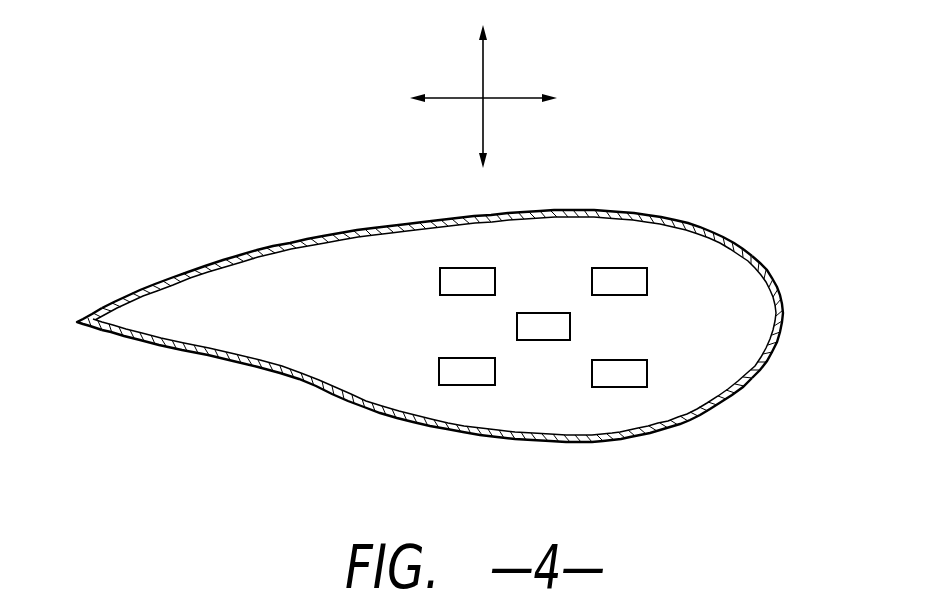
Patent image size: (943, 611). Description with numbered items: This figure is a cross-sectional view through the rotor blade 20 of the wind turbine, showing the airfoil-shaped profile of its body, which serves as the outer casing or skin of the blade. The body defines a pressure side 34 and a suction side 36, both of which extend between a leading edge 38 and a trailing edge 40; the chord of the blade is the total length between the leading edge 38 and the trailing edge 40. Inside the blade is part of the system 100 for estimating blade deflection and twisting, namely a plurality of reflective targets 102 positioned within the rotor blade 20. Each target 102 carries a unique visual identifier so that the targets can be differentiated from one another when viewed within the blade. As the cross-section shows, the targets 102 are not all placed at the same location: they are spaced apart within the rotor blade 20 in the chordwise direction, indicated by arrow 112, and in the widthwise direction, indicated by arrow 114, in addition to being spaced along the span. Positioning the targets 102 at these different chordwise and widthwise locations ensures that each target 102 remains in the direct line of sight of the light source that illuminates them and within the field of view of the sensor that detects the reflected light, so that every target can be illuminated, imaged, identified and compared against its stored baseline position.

The rotor blade 20 is at (718, 192).
The pressure side 34 is at (355, 413).
The suction side 36 is at (387, 214).
The leading edge 38 is at (784, 315).
The trailing edge 40 is at (75, 320).
The system 100 is at (503, 317).
The reflective targets 102 is at (546, 317).
The chordwise direction 112 is at (508, 98).
The widthwise direction 114 is at (480, 70).